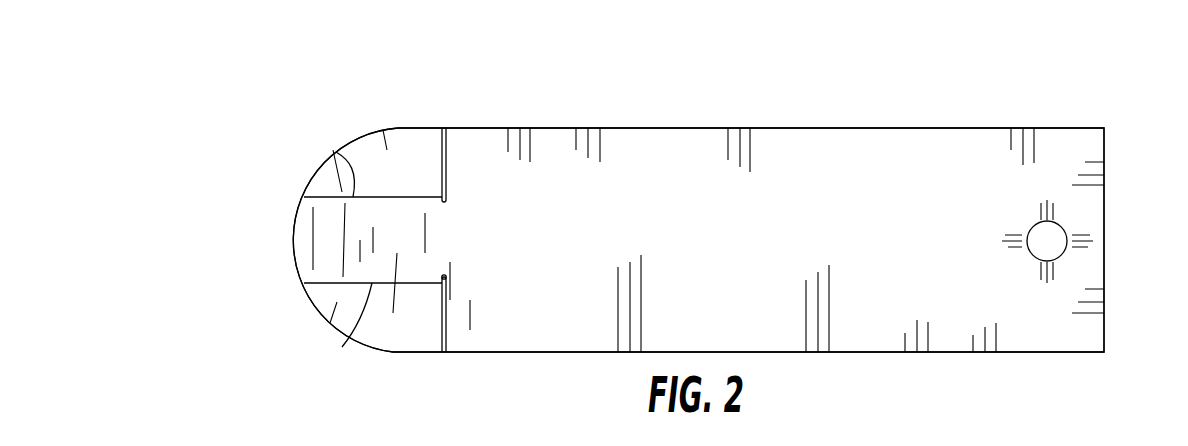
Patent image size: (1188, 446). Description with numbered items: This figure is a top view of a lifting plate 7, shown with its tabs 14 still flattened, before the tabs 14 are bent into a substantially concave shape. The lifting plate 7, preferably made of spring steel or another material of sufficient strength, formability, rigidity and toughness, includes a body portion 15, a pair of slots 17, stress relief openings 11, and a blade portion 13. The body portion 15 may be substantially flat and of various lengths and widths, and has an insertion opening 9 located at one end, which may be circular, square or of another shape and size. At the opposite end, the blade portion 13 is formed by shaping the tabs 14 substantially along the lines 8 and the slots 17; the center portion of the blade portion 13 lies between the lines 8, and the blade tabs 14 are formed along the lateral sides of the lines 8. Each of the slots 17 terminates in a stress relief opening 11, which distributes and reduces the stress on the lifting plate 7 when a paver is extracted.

The lifting plate 7 is at (183, 105).
The lines 8 is at (336, 152).
The insertion opening 9 is at (1047, 241).
The stress relief openings 11 is at (446, 278).
The blade portion 13 is at (297, 223).
The tabs 14 is at (392, 177).
The body portion 15 is at (947, 128).
The slots 17 is at (446, 167).